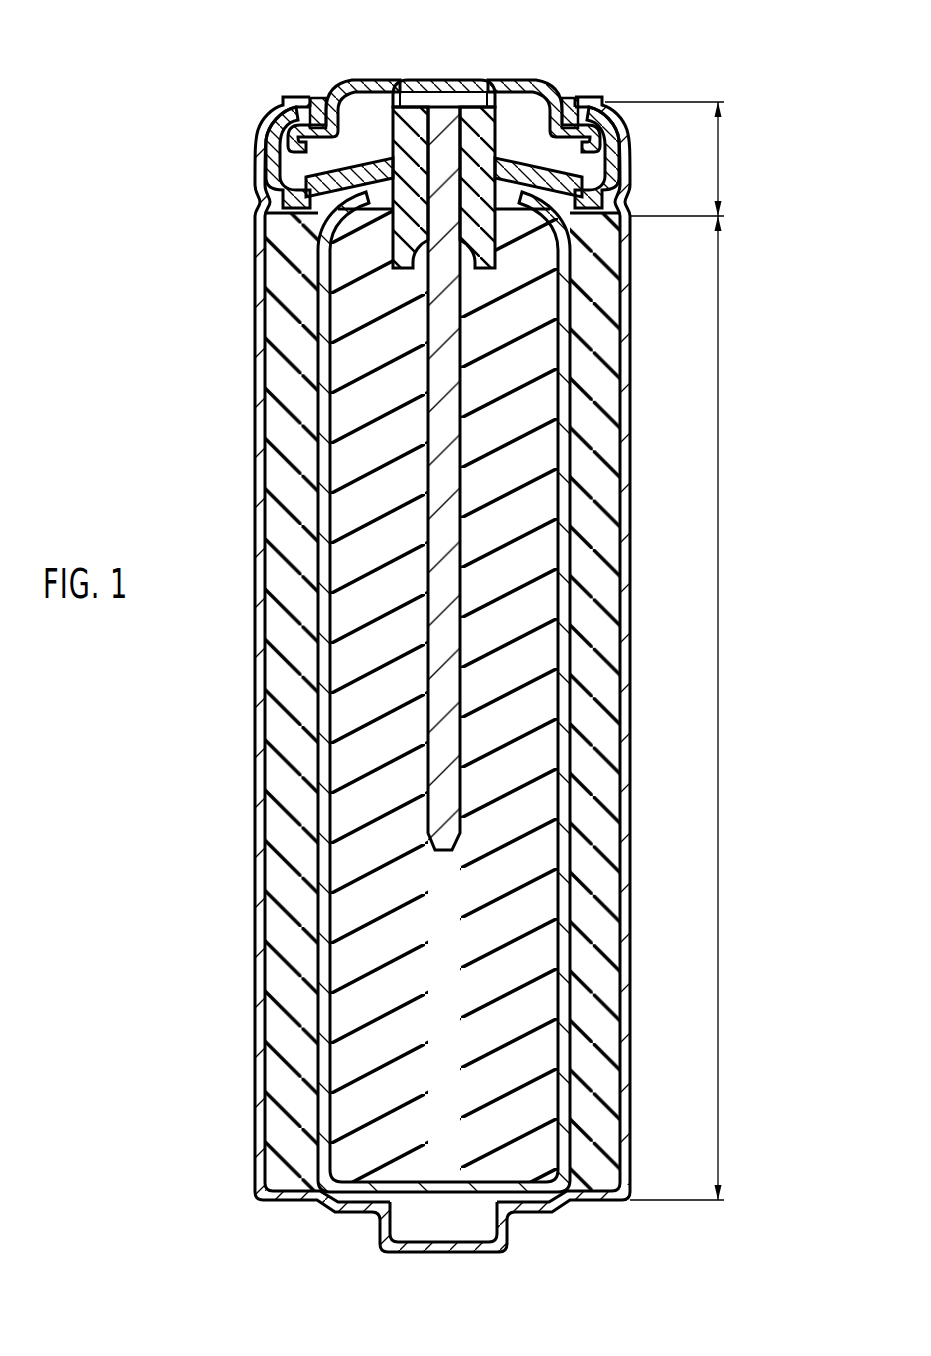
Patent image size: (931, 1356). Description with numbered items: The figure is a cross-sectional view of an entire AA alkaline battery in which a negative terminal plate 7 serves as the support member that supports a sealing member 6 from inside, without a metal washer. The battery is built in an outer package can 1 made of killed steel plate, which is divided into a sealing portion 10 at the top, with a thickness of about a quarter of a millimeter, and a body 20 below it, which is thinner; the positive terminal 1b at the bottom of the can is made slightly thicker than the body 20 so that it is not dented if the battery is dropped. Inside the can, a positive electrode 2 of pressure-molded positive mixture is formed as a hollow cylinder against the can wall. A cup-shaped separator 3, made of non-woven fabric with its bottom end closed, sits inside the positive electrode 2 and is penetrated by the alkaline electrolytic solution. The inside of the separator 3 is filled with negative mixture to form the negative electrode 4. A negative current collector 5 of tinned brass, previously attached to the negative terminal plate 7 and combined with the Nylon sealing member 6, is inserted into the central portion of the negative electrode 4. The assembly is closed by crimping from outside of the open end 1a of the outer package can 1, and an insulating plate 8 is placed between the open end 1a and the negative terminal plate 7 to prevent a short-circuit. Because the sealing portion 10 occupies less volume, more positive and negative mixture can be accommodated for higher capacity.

The outer package can 1 is at (260, 403).
The open end 1a is at (626, 140).
The positive terminal 1b is at (453, 1247).
The positive electrode 2 is at (283, 505).
The separator 3 is at (327, 583).
The negative electrode 4 is at (367, 663).
The negative current collector 5 is at (440, 710).
The sealing member 6 is at (270, 134).
The negative terminal plate 7 is at (350, 80).
The insulating plate 8 is at (575, 98).
The sealing portion 10 is at (718, 165).
The body 20 is at (718, 600).